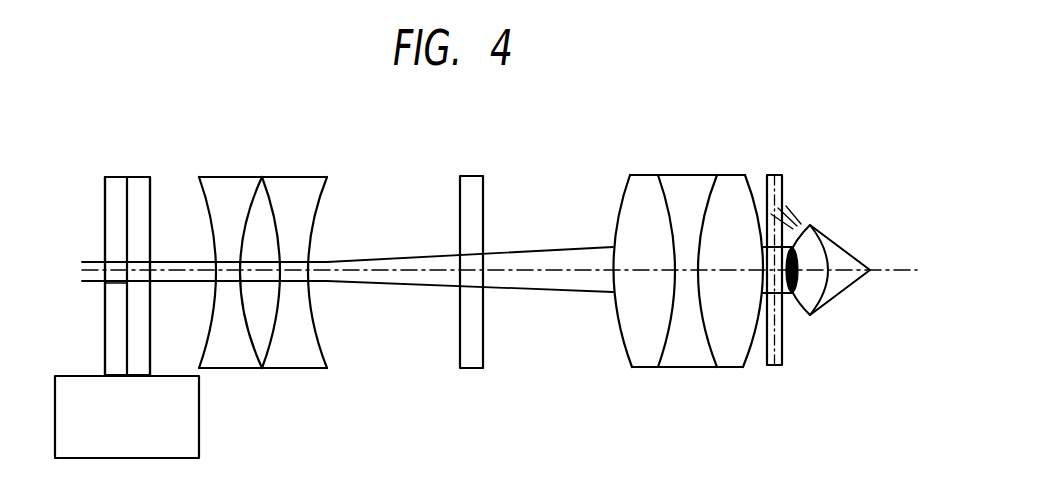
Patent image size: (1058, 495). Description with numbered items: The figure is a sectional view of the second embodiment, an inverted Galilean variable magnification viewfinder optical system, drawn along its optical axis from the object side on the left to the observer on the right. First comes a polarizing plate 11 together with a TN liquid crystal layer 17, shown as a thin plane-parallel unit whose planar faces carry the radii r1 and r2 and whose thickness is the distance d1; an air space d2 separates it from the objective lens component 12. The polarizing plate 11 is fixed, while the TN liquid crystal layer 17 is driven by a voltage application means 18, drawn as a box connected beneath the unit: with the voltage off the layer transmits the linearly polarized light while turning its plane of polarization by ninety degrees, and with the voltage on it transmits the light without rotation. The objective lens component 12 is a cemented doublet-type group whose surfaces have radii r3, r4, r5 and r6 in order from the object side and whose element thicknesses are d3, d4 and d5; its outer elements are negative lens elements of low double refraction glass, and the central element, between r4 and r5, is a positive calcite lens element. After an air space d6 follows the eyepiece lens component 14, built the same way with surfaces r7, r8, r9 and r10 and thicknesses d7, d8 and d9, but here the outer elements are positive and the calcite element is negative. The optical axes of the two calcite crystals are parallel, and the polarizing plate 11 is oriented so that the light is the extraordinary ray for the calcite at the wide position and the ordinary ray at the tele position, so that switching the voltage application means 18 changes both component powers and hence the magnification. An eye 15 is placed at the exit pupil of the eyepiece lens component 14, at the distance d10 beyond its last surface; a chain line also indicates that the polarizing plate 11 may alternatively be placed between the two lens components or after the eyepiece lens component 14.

The polarizing plate 11 is at (118, 177).
The TN liquid crystal layer 17 is at (136, 177).
The objective lens component 12 is at (262, 249).
The eyepiece lens component 14 is at (689, 247).
The eye 15 is at (806, 222).
The voltage application means 18 is at (199, 430).
The radius of curvature r1 is at (105, 196).
The radius of curvature r2 is at (150, 196).
The radius of curvature r3 is at (206, 192).
The radius of curvature r4 is at (244, 194).
The radius of curvature r5 is at (279, 194).
The radius of curvature r6 is at (322, 194).
The radius of curvature r7 is at (620, 195).
The radius of curvature r8 is at (668, 197).
The radius of curvature r9 is at (710, 195).
The radius of curvature r10 is at (757, 195).
The distance between surfaces d1 is at (122, 284).
The distance between surfaces d2 is at (170, 281).
The distance between surfaces d3 is at (223, 368).
The distance between surfaces d4 is at (278, 368).
The distance between surfaces d5 is at (316, 368).
The distance between surfaces d6 is at (411, 283).
The distance between surfaces d7 is at (647, 270).
The distance between surfaces d8 is at (693, 270).
The distance between surfaces d9 is at (752, 270).
The distance between surfaces d10 is at (777, 290).